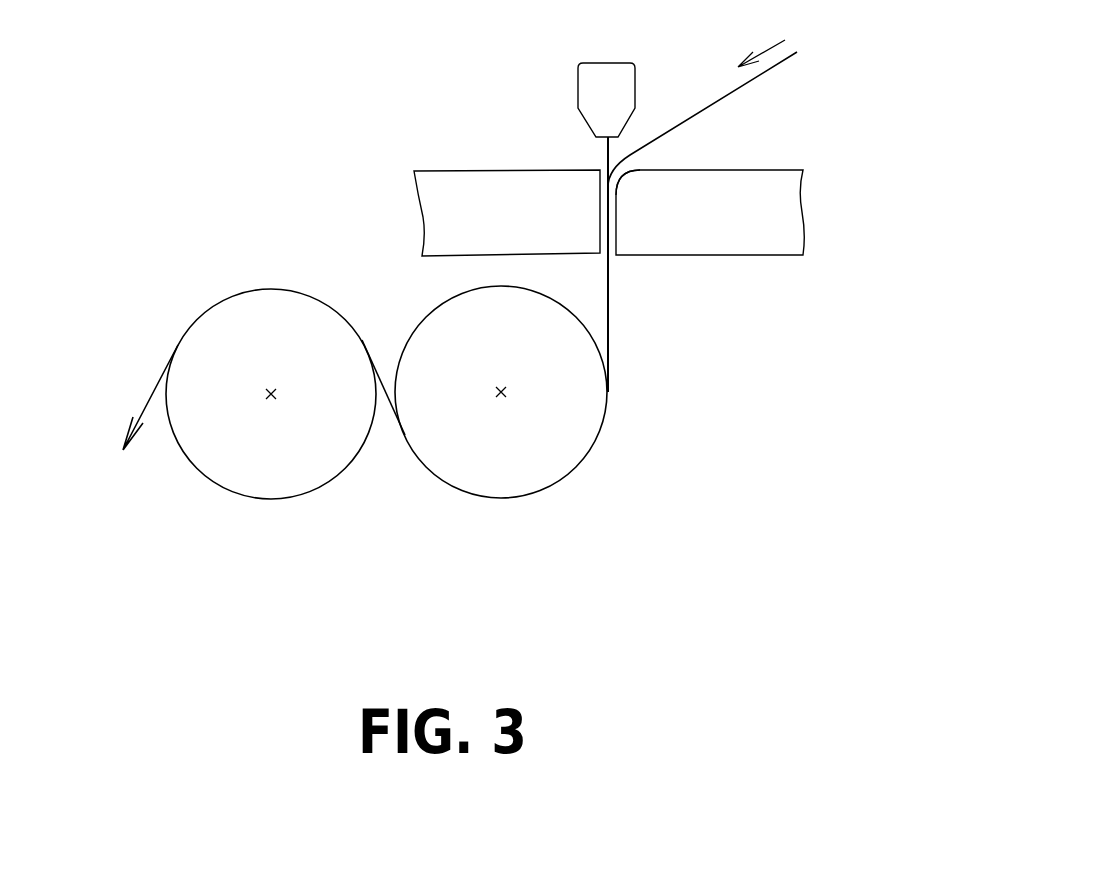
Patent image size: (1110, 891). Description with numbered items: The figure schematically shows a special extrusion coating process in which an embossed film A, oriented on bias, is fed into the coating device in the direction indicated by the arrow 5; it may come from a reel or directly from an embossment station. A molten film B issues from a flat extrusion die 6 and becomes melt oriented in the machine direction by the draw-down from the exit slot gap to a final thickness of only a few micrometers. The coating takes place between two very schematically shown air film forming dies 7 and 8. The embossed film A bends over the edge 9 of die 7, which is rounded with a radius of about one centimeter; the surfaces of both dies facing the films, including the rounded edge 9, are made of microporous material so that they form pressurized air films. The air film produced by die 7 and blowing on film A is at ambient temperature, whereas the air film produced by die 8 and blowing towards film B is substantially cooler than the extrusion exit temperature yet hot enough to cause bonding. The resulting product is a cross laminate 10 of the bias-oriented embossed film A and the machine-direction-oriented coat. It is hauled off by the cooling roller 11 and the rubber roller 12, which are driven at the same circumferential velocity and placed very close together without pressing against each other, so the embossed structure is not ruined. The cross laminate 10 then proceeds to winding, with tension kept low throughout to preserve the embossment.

The arrow 5 is at (770, 45).
The embossed film A is at (703, 110).
The flat extrusion die 6 is at (606, 100).
The molten film B is at (590, 150).
The air film forming die 7 is at (710, 212).
The air film forming die 8 is at (507, 213).
The rounded edge 9 is at (622, 188).
The cross laminate 10 is at (610, 318).
The cooling roller 11 is at (501, 392).
The rubber roller 12 is at (271, 394).